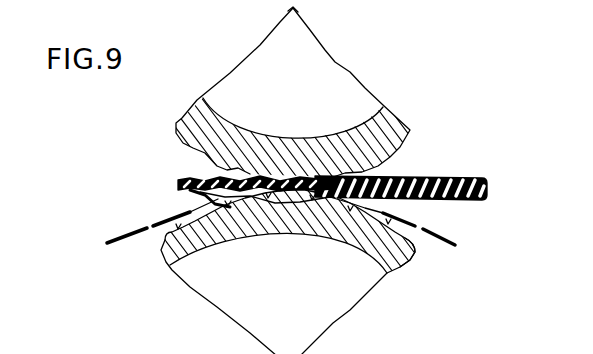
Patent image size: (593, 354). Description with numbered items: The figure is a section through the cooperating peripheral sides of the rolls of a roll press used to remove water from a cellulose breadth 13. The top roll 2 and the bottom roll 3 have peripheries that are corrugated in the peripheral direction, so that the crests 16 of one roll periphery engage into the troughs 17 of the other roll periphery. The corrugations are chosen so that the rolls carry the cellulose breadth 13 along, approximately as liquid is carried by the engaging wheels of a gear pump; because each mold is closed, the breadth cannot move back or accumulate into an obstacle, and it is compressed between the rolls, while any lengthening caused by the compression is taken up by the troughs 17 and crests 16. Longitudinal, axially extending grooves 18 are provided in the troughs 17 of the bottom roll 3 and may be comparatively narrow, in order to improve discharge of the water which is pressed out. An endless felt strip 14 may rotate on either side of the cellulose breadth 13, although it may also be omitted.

The top roll 2 is at (184, 121).
The bottom roll 3 is at (176, 271).
The cellulose breadth 13 is at (478, 176).
The endless felt strip 14 is at (116, 240).
The crests 16 is at (192, 180).
The troughs 17 is at (178, 226).
The longitudinal grooves 18 is at (401, 265).